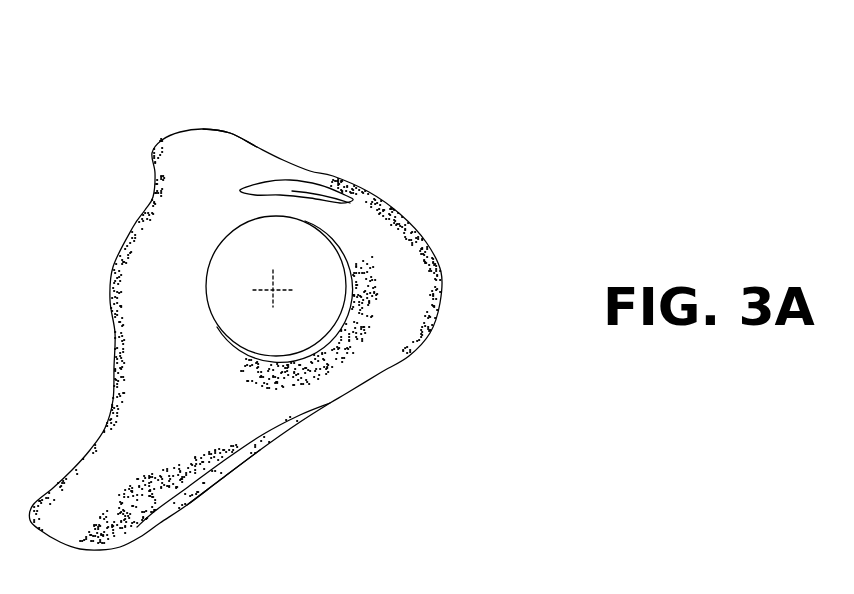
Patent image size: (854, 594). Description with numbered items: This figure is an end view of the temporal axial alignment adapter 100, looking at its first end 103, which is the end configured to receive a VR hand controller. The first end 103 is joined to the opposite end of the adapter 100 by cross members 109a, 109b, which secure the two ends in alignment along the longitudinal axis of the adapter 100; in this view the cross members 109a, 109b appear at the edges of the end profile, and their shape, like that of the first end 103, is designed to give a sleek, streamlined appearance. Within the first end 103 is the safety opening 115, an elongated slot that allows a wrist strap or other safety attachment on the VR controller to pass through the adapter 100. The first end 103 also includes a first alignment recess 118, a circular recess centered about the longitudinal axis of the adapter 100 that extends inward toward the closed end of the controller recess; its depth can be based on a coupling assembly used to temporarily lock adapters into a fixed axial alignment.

The temporal axial alignment adapter 100 is at (176, 85).
The first end 103 is at (467, 287).
The cross member 109a is at (225, 485).
The cross member 109b is at (238, 137).
The safety opening 115 is at (297, 182).
The first alignment recess 118 is at (208, 268).